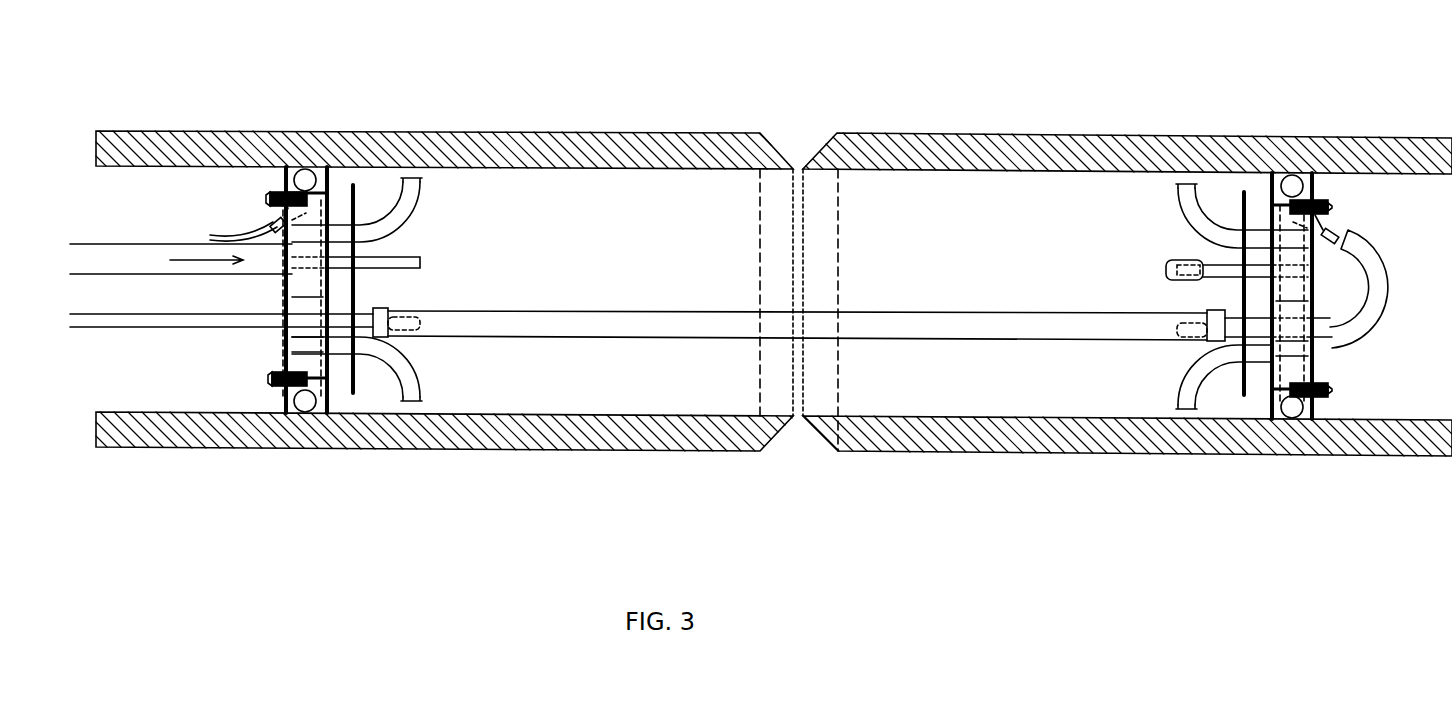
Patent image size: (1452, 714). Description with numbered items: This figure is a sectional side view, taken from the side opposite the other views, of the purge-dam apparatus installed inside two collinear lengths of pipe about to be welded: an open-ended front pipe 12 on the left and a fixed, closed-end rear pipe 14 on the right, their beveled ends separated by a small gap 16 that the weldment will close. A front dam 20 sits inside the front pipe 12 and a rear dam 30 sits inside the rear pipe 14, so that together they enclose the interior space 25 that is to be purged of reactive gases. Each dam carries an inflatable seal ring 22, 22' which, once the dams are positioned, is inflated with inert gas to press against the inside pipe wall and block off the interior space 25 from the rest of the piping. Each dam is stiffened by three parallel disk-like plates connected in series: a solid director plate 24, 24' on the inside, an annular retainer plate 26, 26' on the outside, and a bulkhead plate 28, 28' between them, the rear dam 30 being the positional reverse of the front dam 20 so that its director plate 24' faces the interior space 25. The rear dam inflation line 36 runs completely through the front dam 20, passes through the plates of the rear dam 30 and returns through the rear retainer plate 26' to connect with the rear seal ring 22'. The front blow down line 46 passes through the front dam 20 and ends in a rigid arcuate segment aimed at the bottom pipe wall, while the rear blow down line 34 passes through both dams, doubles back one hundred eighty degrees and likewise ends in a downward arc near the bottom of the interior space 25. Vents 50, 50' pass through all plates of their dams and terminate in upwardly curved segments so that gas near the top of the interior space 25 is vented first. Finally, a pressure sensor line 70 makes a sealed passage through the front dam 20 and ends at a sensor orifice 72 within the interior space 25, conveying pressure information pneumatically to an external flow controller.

The front pipe 12 is at (620, 148).
The rear pipe 14 is at (955, 160).
The gap 16 is at (797, 162).
The front dam 20 is at (205, 382).
The seal ring 22 is at (280, 235).
The rear seal ring 22' is at (1275, 239).
The director plate 24 is at (372, 225).
The director plate 24' is at (1203, 246).
The interior space 25 is at (705, 215).
The retainer plate 26 is at (268, 235).
The rear retainer plate 26' is at (1317, 242).
The bulkhead plate 28 is at (309, 233).
The rear bulkhead plate 28' is at (1242, 240).
The rear dam 30 is at (1380, 213).
The rear blow down line 34 is at (1195, 377).
The rear dam inflation line 36 is at (175, 322).
The front blow down line 46 is at (405, 397).
The vent 50 is at (381, 168).
The vent 50' is at (1215, 216).
The pressure sensor line 70 is at (143, 262).
The sensor orifice 72 is at (383, 240).